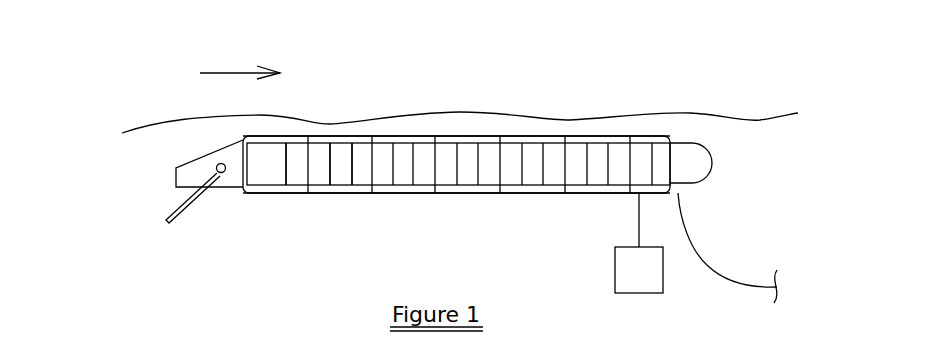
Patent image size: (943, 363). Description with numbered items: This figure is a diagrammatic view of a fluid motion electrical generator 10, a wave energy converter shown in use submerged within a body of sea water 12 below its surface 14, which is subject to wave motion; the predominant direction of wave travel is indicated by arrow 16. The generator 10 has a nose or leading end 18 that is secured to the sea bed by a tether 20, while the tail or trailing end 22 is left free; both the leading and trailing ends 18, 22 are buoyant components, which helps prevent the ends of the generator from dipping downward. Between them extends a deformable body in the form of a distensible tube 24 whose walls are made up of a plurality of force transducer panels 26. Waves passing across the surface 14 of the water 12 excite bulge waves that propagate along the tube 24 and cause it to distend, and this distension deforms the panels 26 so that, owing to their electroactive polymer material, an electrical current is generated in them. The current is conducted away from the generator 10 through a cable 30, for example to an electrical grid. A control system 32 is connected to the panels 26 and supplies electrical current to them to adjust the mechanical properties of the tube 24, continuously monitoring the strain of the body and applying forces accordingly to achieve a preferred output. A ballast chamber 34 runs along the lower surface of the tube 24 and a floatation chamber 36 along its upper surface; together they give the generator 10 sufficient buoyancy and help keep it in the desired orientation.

The fluid motion electrical generator 10 is at (132, 75).
The body of sea water 12 is at (122, 252).
The surface 14 is at (423, 112).
The arrow 16 is at (242, 73).
The nose or leading end 18 is at (192, 172).
The tether 20 is at (173, 212).
The tail or trailing end 22 is at (702, 162).
The distensible tube 24 is at (448, 185).
The force transducer panels 26 is at (340, 178).
The cable 30 is at (723, 289).
The control system 32 is at (615, 281).
The ballast chamber 34 is at (515, 193).
The floatation chamber 36 is at (482, 136).